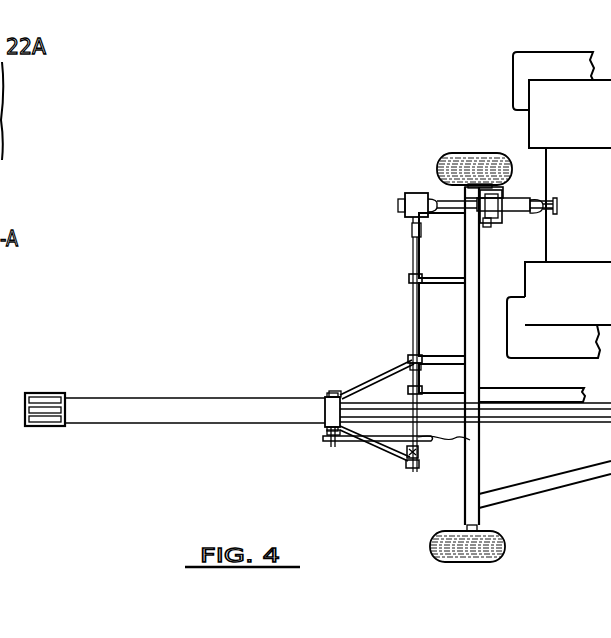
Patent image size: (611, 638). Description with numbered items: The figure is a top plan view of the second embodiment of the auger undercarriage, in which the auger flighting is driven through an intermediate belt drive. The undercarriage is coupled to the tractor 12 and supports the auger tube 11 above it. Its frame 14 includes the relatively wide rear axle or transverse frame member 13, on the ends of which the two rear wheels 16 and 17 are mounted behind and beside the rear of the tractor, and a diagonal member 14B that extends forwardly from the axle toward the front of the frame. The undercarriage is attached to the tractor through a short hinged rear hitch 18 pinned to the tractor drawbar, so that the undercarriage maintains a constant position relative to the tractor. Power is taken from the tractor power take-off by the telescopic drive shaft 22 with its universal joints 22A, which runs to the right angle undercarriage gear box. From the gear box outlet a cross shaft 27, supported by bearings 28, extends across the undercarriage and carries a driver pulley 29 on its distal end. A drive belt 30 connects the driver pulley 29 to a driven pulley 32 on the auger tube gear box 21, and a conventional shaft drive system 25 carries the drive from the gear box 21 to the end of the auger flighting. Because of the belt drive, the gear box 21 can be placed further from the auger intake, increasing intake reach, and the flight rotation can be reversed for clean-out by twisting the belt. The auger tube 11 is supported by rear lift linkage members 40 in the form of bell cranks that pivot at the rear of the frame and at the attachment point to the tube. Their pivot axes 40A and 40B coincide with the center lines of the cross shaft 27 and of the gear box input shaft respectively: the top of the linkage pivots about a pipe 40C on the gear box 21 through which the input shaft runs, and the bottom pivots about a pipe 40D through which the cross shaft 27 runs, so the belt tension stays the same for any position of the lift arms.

The auger tube 11 is at (559, 304).
The tractor 12 is at (535, 92).
The transverse frame member 13 is at (471, 312).
The frame 14 is at (565, 392).
The diagonal member 14B is at (600, 484).
The rear wheel 16 is at (506, 151).
The rear wheel 17 is at (504, 548).
The hinged rear hitch 18 is at (513, 210).
The auger tube gear box 21 is at (325, 410).
The telescopic drive shaft 22 is at (460, 211).
The universal joint 22A is at (433, 193).
The shaft drive system 25 is at (537, 414).
The cross shaft 27 is at (413, 250).
The bearing 28 is at (409, 279).
The driver pulley 29 is at (470, 438).
The drive belt 30 is at (360, 442).
The driven pulley 32 is at (330, 447).
The rear linkage member 40 is at (384, 376).
The pivot axis 40A is at (416, 470).
The pivot axis 40B is at (336, 392).
The pipe 40C is at (327, 431).
The pipe 40D is at (466, 438).